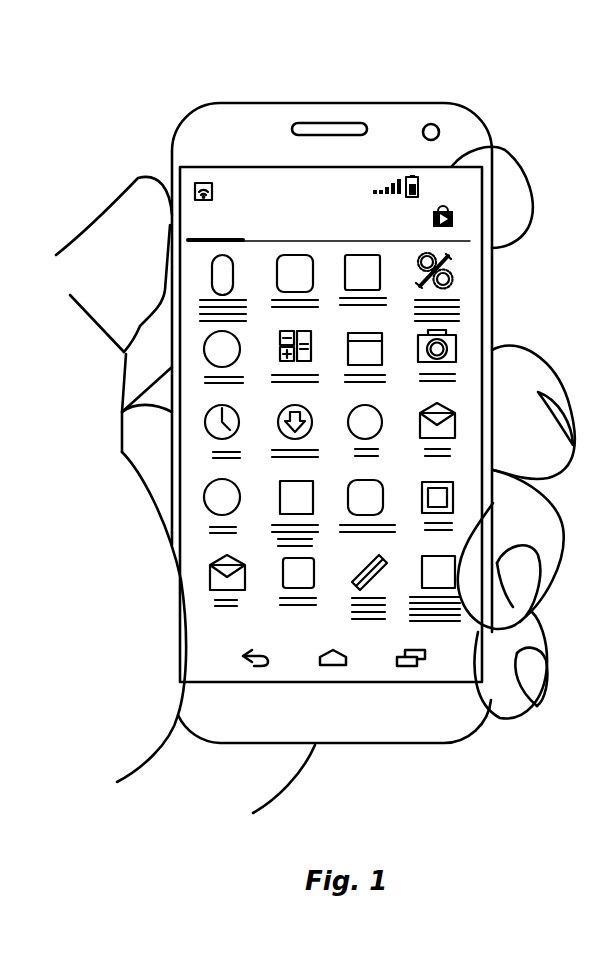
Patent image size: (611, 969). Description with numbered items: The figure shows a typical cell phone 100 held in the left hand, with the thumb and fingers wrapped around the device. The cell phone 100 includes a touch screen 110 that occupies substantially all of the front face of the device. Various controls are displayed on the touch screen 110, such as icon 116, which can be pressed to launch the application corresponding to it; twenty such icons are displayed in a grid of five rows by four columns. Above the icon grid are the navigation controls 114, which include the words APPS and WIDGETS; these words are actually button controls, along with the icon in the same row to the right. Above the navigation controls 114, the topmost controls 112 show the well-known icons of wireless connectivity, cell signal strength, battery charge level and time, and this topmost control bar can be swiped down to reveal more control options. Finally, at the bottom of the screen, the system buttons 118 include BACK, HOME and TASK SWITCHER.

The cell phone 100 is at (477, 89).
The display screen 110 is at (490, 146).
The topmost controls 112 is at (470, 172).
The navigation controls 114 is at (470, 200).
The icon 116 is at (445, 270).
The system buttons 118 is at (457, 640).